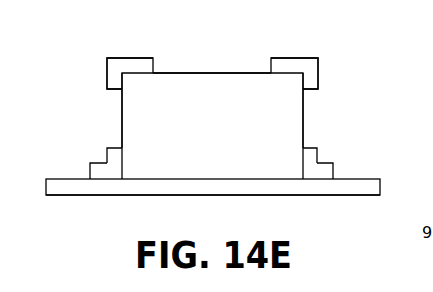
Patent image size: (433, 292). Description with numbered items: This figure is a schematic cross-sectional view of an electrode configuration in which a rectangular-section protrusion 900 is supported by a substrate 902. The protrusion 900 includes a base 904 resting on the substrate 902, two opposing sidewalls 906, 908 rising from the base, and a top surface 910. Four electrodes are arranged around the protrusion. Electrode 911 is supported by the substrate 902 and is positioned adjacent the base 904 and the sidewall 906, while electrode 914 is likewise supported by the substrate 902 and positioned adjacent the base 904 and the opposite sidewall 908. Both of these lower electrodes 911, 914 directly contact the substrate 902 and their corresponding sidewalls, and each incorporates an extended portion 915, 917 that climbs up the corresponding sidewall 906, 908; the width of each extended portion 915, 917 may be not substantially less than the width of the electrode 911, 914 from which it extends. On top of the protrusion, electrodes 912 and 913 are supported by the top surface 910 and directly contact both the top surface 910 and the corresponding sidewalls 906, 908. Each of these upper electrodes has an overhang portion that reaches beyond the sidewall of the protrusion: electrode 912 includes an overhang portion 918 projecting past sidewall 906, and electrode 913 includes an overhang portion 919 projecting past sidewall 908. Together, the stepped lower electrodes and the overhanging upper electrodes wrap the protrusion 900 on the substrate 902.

The protrusion 900 is at (229, 136).
The substrate 902 is at (367, 178).
The base 904 is at (258, 180).
The sidewall 906 is at (122, 106).
The sidewall 908 is at (305, 103).
The top surface 910 is at (198, 72).
The electrode 911 is at (91, 172).
The electrode 912 is at (146, 58).
The electrode 913 is at (280, 58).
The electrode 914 is at (335, 172).
The extended portion 915 is at (115, 147).
The extended portion 917 is at (310, 148).
The overhang portion 918 is at (107, 67).
The overhang portion 919 is at (310, 65).